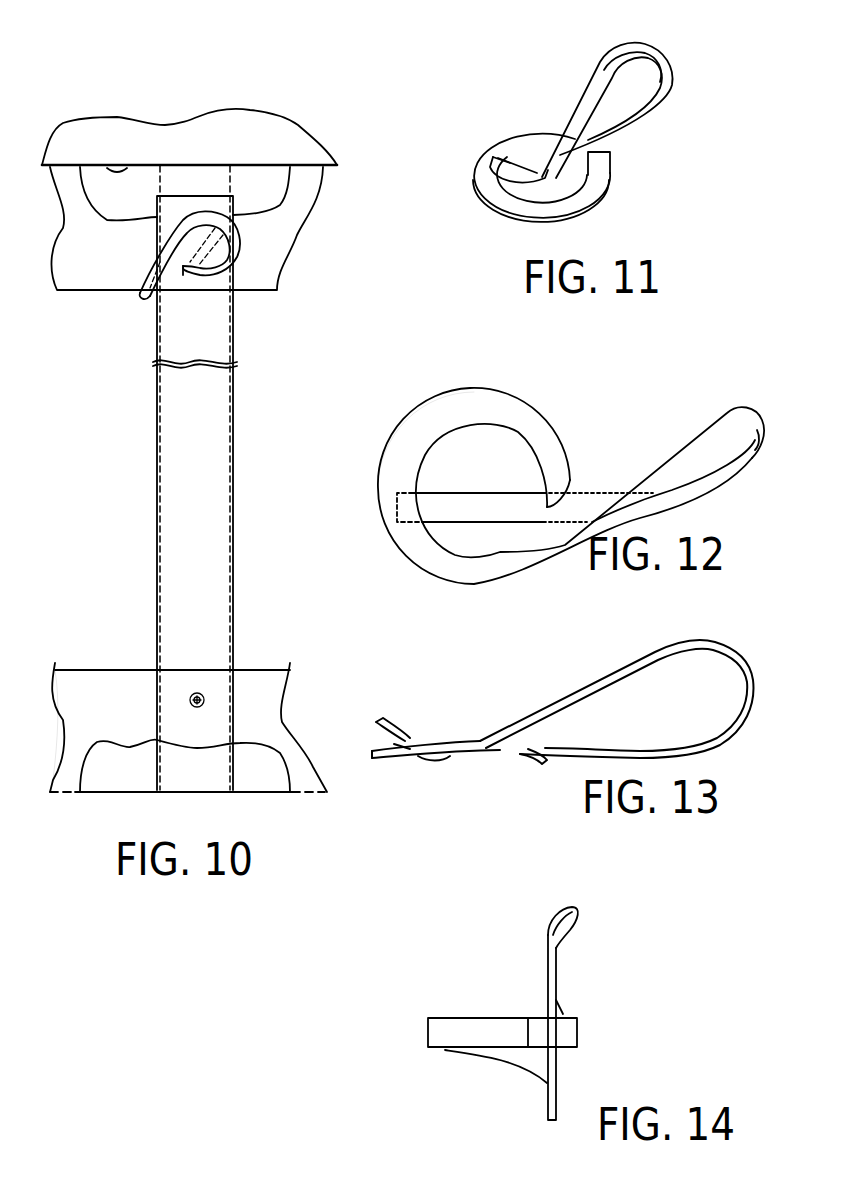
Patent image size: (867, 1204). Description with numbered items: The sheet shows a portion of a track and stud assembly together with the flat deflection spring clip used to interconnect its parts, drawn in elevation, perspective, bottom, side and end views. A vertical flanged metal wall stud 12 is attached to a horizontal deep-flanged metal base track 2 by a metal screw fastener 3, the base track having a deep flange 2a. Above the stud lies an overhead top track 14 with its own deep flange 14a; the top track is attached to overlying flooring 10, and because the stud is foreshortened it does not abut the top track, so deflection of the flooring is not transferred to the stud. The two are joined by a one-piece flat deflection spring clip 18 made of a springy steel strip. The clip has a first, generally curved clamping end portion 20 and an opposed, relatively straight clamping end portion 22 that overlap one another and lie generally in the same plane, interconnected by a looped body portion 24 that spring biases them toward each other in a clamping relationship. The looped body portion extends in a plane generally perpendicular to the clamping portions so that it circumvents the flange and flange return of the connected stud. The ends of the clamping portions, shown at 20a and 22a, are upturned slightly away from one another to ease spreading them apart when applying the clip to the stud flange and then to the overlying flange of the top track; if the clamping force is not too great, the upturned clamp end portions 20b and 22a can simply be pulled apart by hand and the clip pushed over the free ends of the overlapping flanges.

In FIG. 10, the base track 2 is at (188, 698).
In FIG. 10, the deep flange of base track 2a is at (72, 725).
In FIG. 10, the metal screw fastener 3 is at (160, 694).
In FIG. 10, the overlying flooring 10 is at (195, 135).
In FIG. 10, the wall stud 12 is at (150, 442).
In FIG. 10, the top track 14 is at (173, 158).
In FIG. 10, the deep flange of top track 14a is at (93, 263).
In FIG. 10, the flat deflection spring clip 18 is at (258, 257).
In FIG. 11, the flat deflection spring clip 18 is at (561, 128).
In FIG. 12, the flat deflection spring clip 18 is at (551, 446).
In FIG. 13, the flat deflection spring clip 18 is at (567, 721).
In FIG. 14, the flat deflection spring clip 18 is at (539, 1013).
In FIG. 11, the curved clamping end portion 20 is at (587, 178).
In FIG. 12, the curved clamping end portion 20 is at (532, 446).
In FIG. 13, the curved clamping end portion 20 is at (448, 762).
In FIG. 14, the curved clamping end portion 20 is at (618, 1013).
In FIG. 11, the upturned end of curved clamping end portion 20a is at (607, 158).
In FIG. 12, the upturned end of curved clamping end portion 20a is at (571, 478).
In FIG. 13, the upturned end of curved clamping end portion 20a is at (527, 760).
In FIG. 14, the upturned end of curved clamping end portion 20a is at (567, 1012).
In FIG. 12, the upturned clamp end portion 20b is at (460, 418).
In FIG. 13, the upturned clamp end portion 20b is at (372, 758).
In FIG. 14, the upturned clamp end portion 20b is at (573, 933).
In FIG. 11, the straight clamping end portion 22 is at (477, 133).
In FIG. 12, the straight clamping end portion 22 is at (474, 485).
In FIG. 13, the straight clamping end portion 22 is at (417, 738).
In FIG. 14, the straight clamping end portion 22 is at (546, 981).
In FIG. 11, the upturned end of straight clamping end portion 22a is at (495, 158).
In FIG. 12, the upturned end of straight clamping end portion 22a is at (390, 512).
In FIG. 13, the upturned end of straight clamping end portion 22a is at (408, 742).
In FIG. 14, the upturned end of straight clamping end portion 22a is at (527, 1033).
In FIG. 11, the looped body portion 24 is at (677, 63).
In FIG. 12, the looped body portion 24 is at (767, 440).
In FIG. 13, the looped body portion 24 is at (755, 692).
In FIG. 14, the looped body portion 24 is at (453, 1053).